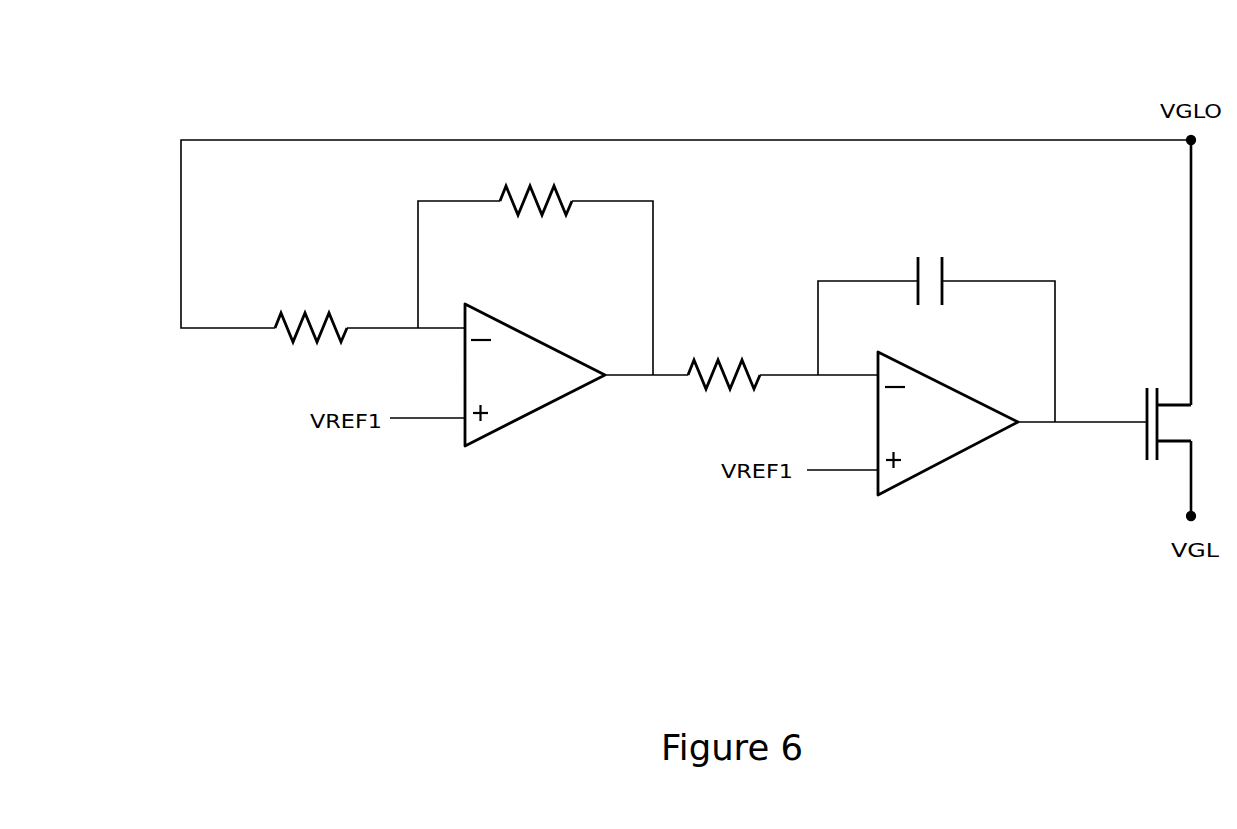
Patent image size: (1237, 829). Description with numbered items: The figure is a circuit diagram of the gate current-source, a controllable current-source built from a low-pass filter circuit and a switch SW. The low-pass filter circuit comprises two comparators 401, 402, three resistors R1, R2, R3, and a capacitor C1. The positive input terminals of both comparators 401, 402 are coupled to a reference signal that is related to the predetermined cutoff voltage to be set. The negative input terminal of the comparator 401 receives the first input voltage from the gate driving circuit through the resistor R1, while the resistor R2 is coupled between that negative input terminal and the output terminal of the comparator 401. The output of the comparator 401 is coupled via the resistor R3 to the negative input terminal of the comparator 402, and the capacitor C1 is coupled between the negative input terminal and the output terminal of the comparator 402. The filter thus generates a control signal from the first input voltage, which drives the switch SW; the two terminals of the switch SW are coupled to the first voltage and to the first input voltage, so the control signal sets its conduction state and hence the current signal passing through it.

The comparator 401 is at (568, 397).
The comparator 402 is at (995, 438).
The resistor R1 is at (311, 312).
The resistor R2 is at (536, 183).
The resistor R3 is at (724, 359).
The capacitor C1 is at (929, 267).
The switch SW is at (1145, 424).